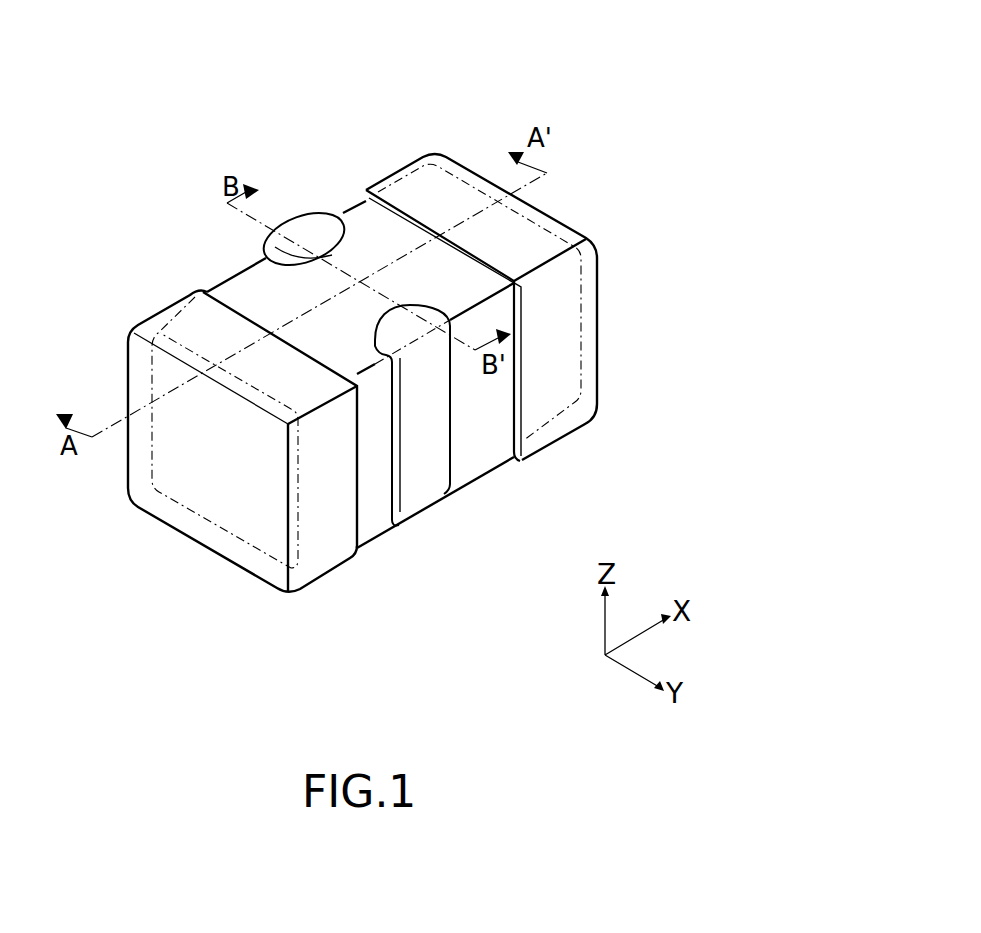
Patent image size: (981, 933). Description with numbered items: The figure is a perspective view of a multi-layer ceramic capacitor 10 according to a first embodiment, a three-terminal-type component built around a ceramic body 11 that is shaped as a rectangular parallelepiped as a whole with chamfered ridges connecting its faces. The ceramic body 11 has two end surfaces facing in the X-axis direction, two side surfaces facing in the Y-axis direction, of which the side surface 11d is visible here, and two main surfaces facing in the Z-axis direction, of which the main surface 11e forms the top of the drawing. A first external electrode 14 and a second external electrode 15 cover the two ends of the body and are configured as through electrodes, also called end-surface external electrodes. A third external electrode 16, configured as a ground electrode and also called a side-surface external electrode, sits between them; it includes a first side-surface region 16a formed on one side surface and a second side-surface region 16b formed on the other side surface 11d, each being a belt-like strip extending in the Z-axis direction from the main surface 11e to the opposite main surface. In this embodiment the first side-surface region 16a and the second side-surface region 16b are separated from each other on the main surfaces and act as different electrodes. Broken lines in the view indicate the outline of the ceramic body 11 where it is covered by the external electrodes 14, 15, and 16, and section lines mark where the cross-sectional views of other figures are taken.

The multi-layer ceramic capacitor 10 is at (481, 108).
The ceramic body 11 is at (334, 128).
The side surface 11d is at (376, 507).
The main surface 11e is at (233, 293).
The first external electrode 14 is at (214, 527).
The second external electrode 15 is at (402, 160).
The third external electrode 16 is at (399, 391).
The first side-surface region 16a is at (300, 230).
The second side-surface region 16b is at (428, 503).